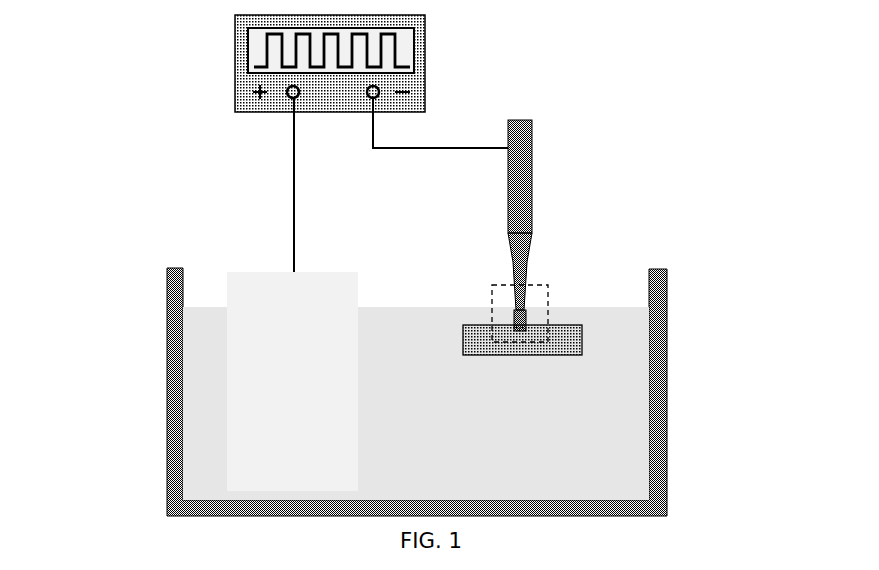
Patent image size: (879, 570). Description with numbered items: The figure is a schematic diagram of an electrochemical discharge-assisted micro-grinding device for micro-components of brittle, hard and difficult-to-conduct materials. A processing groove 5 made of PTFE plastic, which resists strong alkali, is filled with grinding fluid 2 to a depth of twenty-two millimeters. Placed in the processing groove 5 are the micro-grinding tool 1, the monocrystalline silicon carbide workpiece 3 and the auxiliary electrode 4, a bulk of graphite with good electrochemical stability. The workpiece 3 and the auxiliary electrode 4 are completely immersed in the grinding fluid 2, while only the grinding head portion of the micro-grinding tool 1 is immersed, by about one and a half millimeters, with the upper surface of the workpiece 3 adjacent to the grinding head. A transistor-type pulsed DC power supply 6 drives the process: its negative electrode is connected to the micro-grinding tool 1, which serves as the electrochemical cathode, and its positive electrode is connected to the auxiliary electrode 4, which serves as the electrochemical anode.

The micro-grinding tool 1 is at (520, 193).
The grinding fluid 2 is at (628, 323).
The workpiece 3 is at (557, 337).
The auxiliary electrode 4 is at (275, 465).
The processing groove 5 is at (177, 318).
The pulsed DC power supply 6 is at (247, 88).